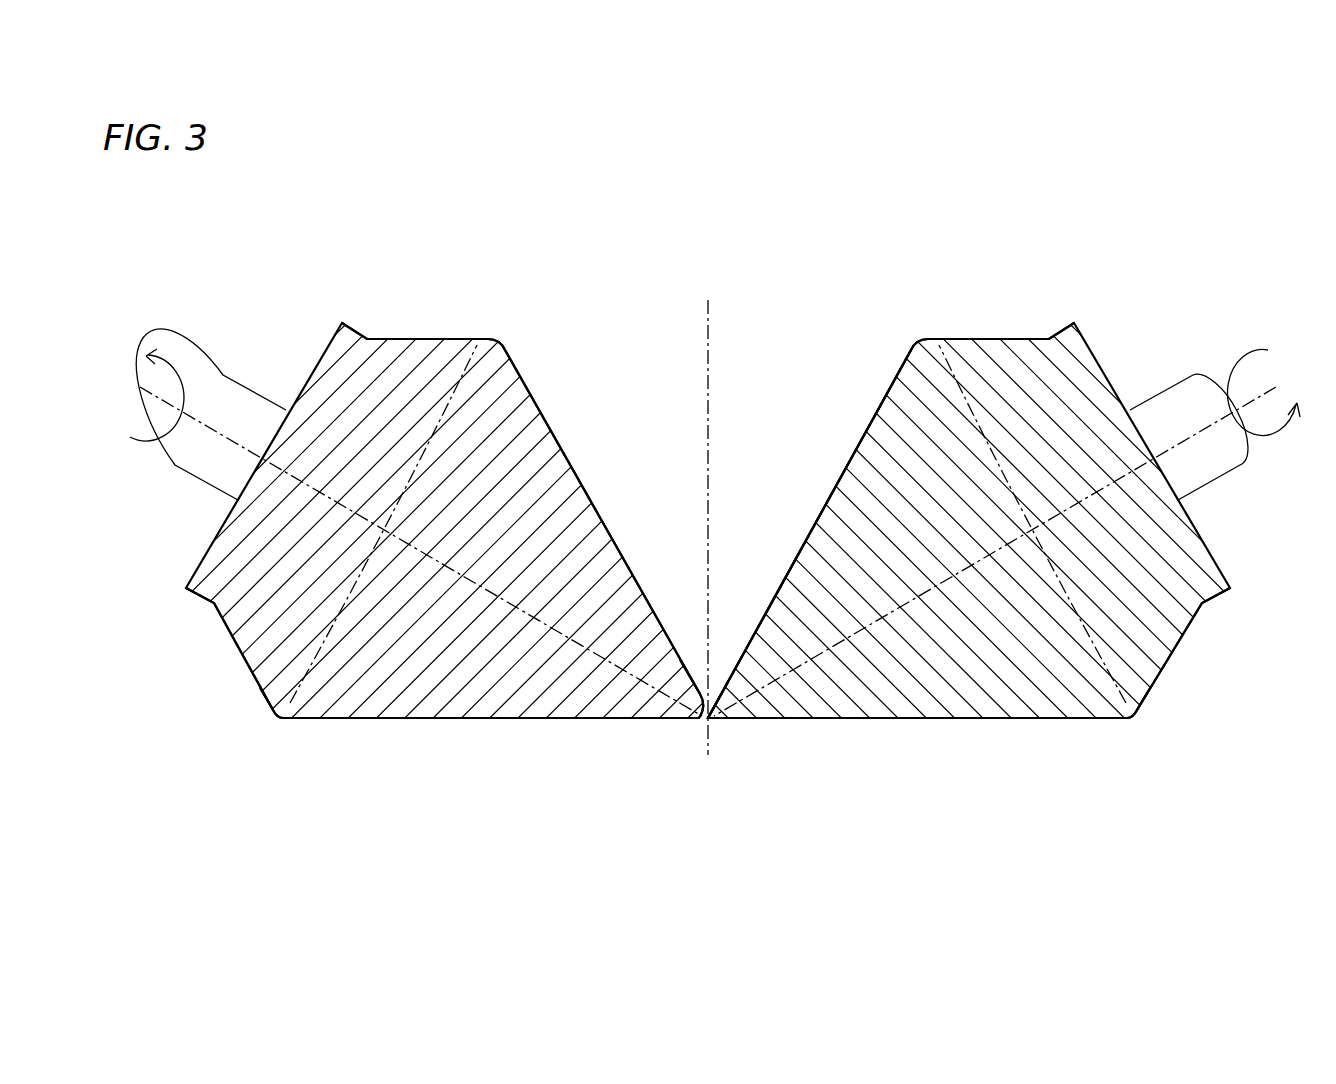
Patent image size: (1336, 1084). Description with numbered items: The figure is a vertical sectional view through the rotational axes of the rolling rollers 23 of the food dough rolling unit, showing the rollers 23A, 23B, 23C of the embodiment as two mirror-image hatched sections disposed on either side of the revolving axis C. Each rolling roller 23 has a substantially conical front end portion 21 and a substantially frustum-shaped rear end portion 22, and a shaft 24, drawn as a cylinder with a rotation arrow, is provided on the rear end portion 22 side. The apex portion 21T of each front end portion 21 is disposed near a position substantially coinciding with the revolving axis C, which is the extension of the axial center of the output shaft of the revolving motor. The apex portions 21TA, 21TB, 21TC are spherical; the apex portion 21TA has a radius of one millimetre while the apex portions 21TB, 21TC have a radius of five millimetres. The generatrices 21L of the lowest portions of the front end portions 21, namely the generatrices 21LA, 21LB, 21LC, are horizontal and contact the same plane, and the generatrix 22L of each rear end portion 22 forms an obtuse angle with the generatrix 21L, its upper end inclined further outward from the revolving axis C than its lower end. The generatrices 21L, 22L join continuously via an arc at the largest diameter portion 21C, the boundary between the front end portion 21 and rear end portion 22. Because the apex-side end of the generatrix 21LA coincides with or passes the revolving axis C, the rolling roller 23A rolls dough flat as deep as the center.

The front end portion 21 is at (593, 540).
The apex portion 21T is at (701, 780).
The apex portion 21TA is at (701, 780).
The apex portion 21TB is at (701, 780).
The apex portion 21TC is at (700, 720).
The generatrix 21L is at (705, 809).
The generatrix 21LA is at (705, 809).
The generatrix 21LB is at (705, 809).
The generatrix 21LC is at (480, 720).
The largest diameter portion 21C is at (280, 720).
The rear end portion 22 is at (418, 352).
The generatrix 22L is at (248, 675).
The rolling roller 23 is at (808, 427).
The rolling roller 23A is at (913, 373).
The rolling roller 23B is at (594, 455).
The rolling roller 23C is at (503, 373).
The shaft 24 is at (252, 410).
The revolving axis C is at (708, 300).